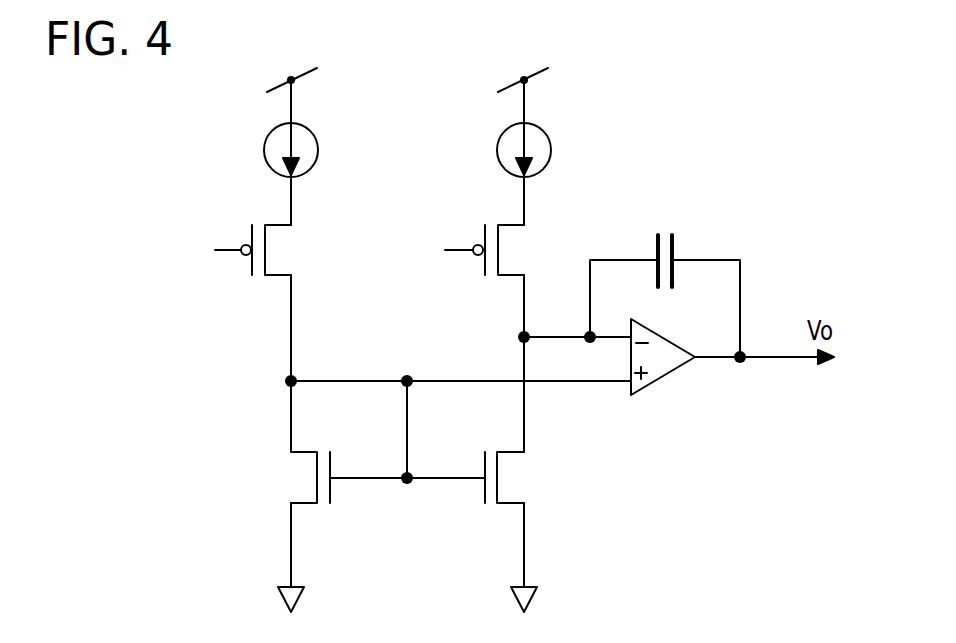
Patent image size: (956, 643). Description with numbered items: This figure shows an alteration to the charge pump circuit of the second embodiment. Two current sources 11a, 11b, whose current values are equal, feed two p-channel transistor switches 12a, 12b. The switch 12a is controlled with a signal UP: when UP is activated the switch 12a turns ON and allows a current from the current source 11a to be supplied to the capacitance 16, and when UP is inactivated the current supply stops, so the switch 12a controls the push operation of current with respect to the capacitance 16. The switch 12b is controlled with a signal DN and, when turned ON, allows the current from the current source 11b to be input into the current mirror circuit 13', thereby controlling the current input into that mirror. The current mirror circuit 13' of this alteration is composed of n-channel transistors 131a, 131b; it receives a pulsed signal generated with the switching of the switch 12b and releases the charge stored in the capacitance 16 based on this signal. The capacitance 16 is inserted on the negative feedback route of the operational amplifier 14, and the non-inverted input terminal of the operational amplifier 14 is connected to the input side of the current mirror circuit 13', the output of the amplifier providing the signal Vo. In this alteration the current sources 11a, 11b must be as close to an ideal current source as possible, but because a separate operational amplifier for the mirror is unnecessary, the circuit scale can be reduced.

The current source 11b is at (265, 147).
The current source 11a is at (498, 147).
The switch 12b is at (278, 223).
The switch 12a is at (506, 223).
The capacitance 16 is at (675, 243).
The operational amplifier 14 is at (670, 372).
The n-channel transistor 131b is at (340, 427).
The n-channel transistor 131a is at (512, 452).
The current mirror circuit 13' is at (358, 502).